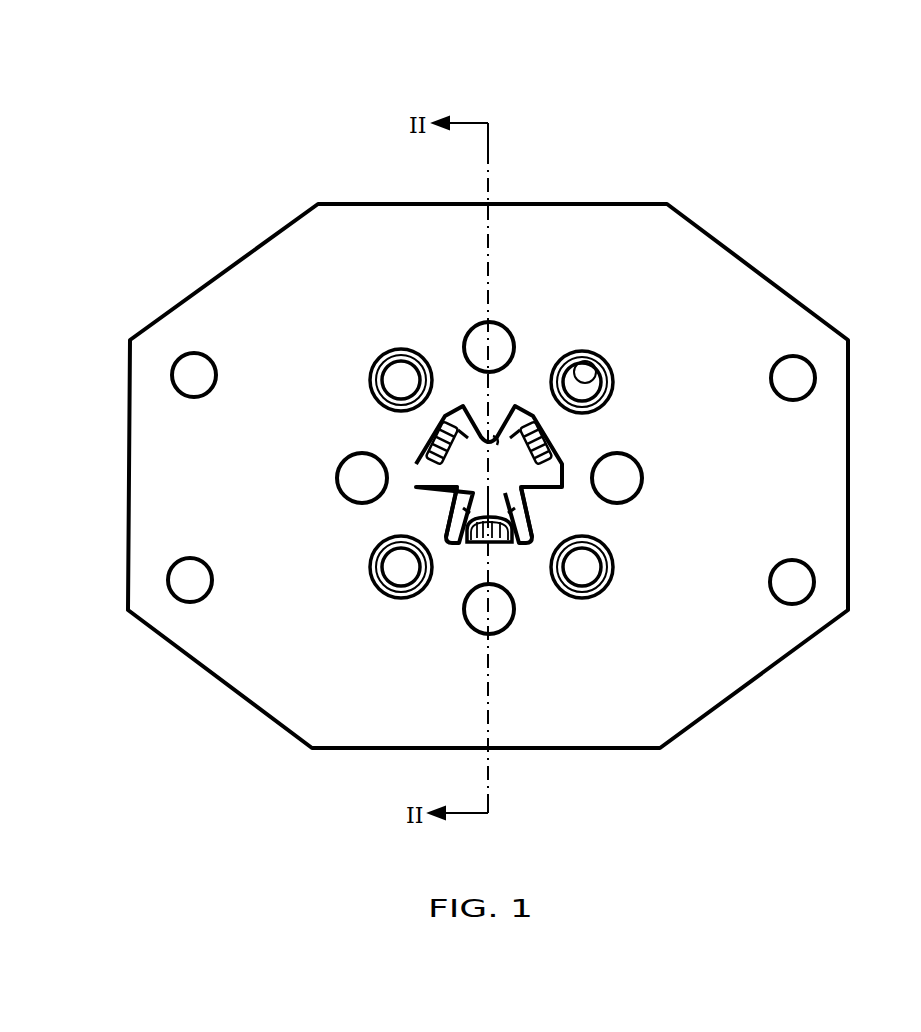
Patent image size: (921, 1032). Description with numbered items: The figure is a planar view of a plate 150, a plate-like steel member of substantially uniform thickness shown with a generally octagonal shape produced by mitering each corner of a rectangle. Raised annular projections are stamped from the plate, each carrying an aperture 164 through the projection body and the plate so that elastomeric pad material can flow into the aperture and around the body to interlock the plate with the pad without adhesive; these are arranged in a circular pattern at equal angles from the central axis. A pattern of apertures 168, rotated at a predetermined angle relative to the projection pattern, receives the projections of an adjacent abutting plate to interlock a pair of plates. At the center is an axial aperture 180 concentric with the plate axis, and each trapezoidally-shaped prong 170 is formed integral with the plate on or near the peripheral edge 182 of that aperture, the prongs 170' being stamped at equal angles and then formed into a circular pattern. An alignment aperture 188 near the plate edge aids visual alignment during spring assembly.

The plate 150 is at (620, 165).
The aperture 164 is at (576, 360).
The apertures 168 is at (509, 328).
The prong 170 is at (494, 502).
The prongs (flat pattern) 170' is at (488, 512).
The axial aperture 180 is at (506, 485).
The peripheral edge 182 is at (494, 436).
The alignment aperture 188 is at (193, 398).